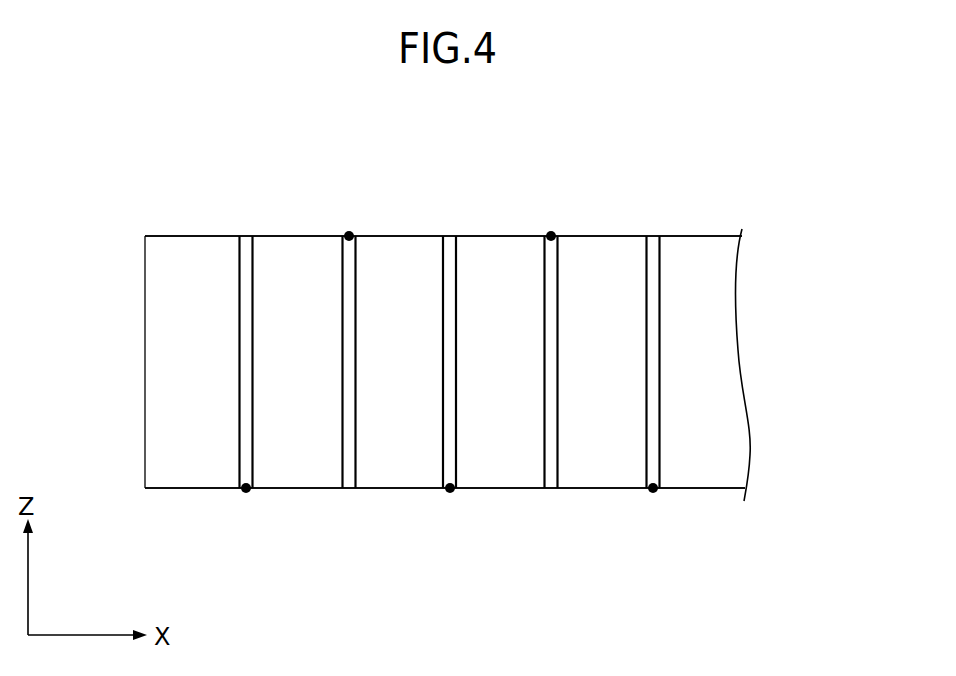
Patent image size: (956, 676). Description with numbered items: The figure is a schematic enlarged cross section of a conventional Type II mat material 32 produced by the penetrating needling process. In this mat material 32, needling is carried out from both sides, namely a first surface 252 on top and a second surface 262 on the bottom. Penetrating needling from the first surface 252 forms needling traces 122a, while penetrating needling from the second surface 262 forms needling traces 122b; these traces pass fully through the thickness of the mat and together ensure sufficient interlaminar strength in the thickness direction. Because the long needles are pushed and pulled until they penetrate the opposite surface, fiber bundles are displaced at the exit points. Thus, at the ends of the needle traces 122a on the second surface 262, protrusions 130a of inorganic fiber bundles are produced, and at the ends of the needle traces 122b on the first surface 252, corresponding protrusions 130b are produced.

The mat material 32 is at (613, 137).
The first surface 252 is at (192, 236).
The second surface 262 is at (192, 489).
The needling traces 122a is at (251, 236).
The needling traces 122b is at (350, 489).
The protrusions 130a is at (249, 493).
The protrusions 130b is at (350, 232).